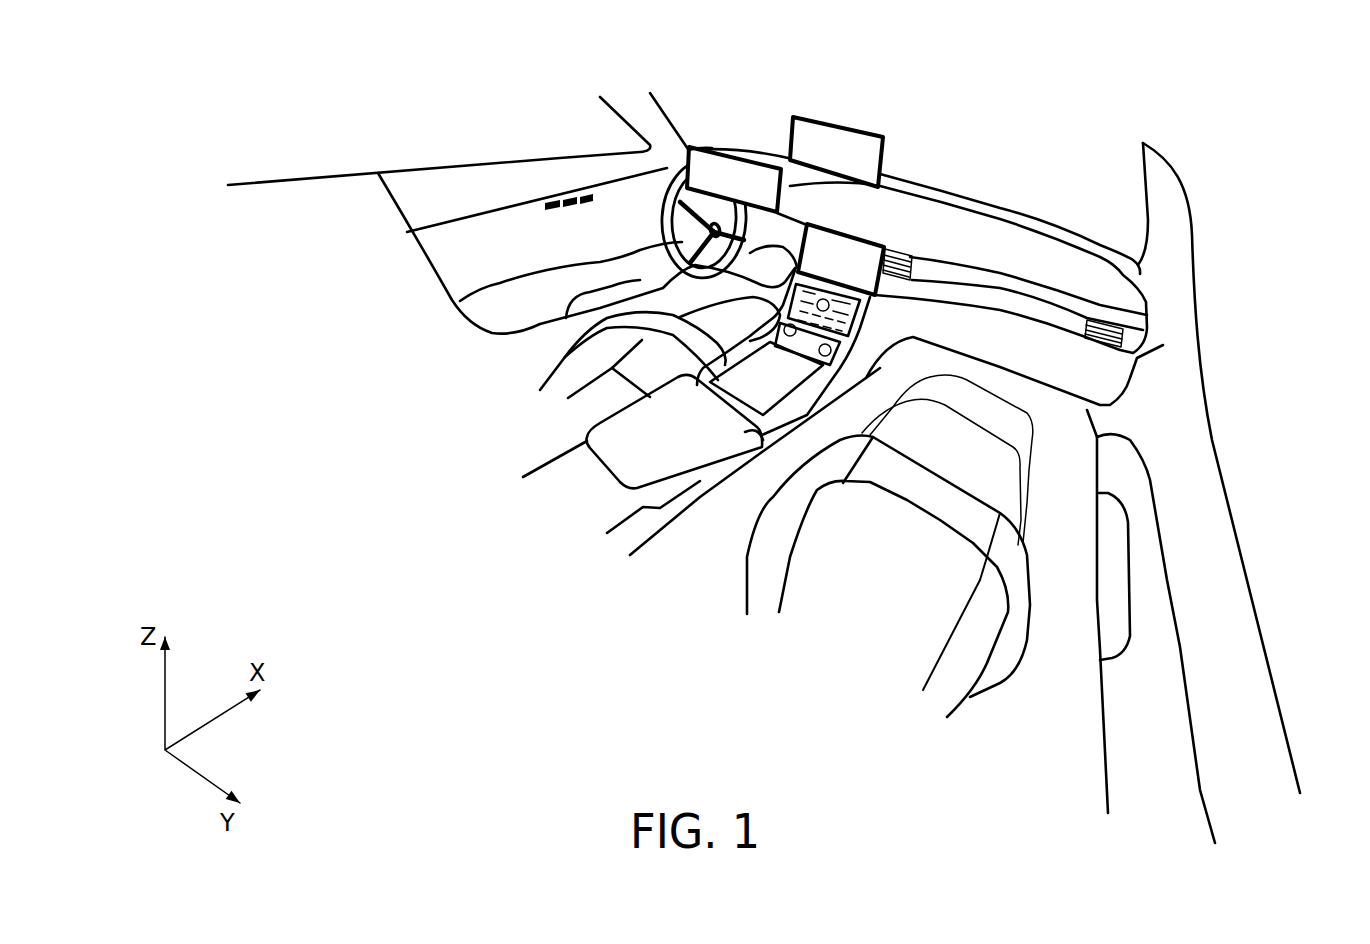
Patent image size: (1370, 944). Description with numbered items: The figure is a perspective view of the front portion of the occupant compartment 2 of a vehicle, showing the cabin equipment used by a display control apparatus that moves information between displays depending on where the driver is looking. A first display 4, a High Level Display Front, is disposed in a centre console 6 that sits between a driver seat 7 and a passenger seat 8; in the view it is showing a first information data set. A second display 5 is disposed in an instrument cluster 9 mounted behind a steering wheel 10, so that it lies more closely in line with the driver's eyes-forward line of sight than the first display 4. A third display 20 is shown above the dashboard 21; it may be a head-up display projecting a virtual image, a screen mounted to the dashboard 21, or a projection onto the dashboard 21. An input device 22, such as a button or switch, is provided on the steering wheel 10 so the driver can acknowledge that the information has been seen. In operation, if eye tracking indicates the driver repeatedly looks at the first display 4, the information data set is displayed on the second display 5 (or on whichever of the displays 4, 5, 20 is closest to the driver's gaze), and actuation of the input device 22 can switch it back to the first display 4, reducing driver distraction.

The occupant compartment 2 is at (1240, 293).
The first display 4 is at (863, 242).
The second display 5 is at (738, 175).
The centre console 6 is at (721, 437).
The driver seat 7 is at (572, 378).
The passenger seat 8 is at (878, 590).
The instrument cluster 9 is at (685, 148).
The steering wheel 10 is at (668, 195).
The third display 20 is at (845, 150).
The dashboard 21 is at (933, 222).
The input device 22 is at (710, 228).